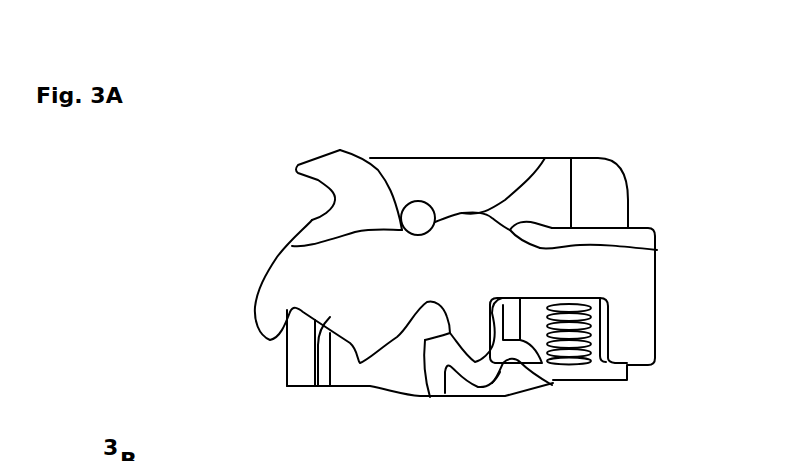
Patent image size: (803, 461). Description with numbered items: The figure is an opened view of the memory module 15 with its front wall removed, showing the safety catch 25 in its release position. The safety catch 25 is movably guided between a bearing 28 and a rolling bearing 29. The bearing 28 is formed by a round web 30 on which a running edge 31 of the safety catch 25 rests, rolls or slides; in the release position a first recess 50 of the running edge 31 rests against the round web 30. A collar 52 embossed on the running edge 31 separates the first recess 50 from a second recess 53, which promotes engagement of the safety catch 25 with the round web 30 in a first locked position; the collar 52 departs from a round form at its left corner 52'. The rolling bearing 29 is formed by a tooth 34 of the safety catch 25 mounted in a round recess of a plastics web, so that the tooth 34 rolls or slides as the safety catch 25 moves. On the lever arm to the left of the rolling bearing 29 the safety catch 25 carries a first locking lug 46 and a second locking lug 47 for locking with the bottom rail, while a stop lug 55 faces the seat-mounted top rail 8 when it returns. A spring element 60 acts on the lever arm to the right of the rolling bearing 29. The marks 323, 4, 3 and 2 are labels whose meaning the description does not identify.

The memory module 15 is at (660, 112).
The second recess 53 is at (657, 250).
The stop lug 55 is at (325, 167).
The first recess 50 is at (292, 246).
The round web 30 is at (417, 222).
The guide surface 323 is at (403, 182).
The running edge 31 is at (405, 172).
The bearing 28 is at (465, 185).
The left corner 52' is at (505, 135).
The collar 52 is at (544, 146).
The safety catch 25 is at (293, 271).
The first locking lug 46 is at (265, 309).
The top rail 8 is at (315, 386).
The base plate 4 is at (419, 420).
The second locking lug 47 is at (372, 385).
The tooth 34 is at (432, 398).
The rolling bearing 29 is at (470, 375).
The carrier 3 is at (500, 378).
The spring pocket 2 is at (558, 379).
The spring element 60 is at (578, 365).